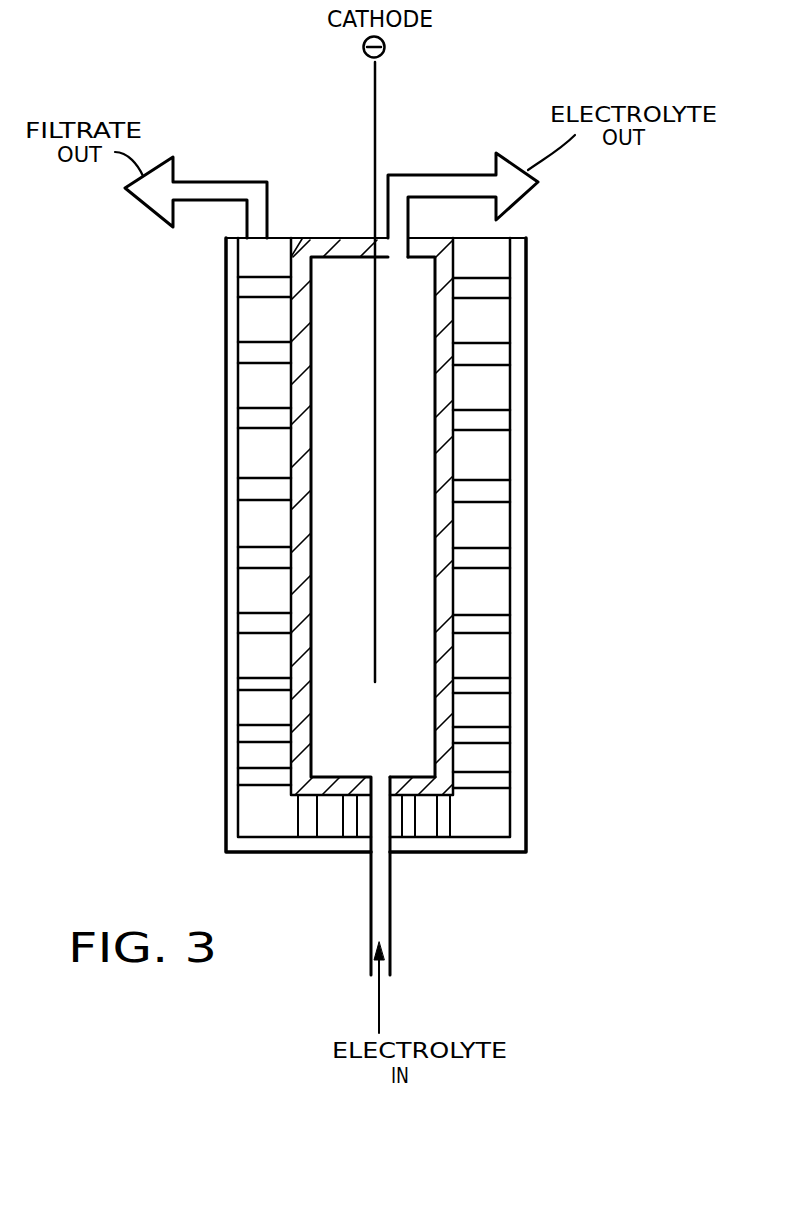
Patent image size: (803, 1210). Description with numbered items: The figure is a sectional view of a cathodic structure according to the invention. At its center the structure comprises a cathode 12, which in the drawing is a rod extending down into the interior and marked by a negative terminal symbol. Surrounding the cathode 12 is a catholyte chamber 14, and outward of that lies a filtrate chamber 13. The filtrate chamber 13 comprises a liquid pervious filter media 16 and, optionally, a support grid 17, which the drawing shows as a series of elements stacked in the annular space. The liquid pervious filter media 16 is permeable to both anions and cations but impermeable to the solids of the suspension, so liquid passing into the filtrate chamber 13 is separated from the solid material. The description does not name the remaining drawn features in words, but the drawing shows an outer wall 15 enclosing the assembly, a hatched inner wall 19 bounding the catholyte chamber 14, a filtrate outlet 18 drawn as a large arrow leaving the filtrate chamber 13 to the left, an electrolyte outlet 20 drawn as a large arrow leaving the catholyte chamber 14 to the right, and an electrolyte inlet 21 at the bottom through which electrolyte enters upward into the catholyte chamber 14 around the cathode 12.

The cathode 12 is at (376, 113).
The filtrate chamber 13 is at (492, 266).
The catholyte chamber 14 is at (358, 379).
The housing 15 is at (225, 773).
The liquid pervious filter media 16 is at (512, 324).
The support grid 17 is at (500, 422).
The filtrate outlet 18 is at (240, 182).
The porous membrane liner 19 is at (323, 238).
The electrolyte outlet 20 is at (441, 175).
The electrolyte inlet 21 is at (372, 900).